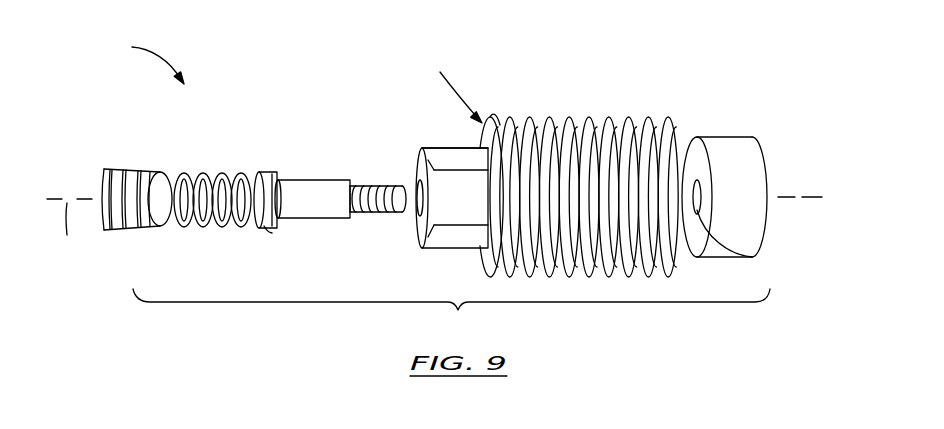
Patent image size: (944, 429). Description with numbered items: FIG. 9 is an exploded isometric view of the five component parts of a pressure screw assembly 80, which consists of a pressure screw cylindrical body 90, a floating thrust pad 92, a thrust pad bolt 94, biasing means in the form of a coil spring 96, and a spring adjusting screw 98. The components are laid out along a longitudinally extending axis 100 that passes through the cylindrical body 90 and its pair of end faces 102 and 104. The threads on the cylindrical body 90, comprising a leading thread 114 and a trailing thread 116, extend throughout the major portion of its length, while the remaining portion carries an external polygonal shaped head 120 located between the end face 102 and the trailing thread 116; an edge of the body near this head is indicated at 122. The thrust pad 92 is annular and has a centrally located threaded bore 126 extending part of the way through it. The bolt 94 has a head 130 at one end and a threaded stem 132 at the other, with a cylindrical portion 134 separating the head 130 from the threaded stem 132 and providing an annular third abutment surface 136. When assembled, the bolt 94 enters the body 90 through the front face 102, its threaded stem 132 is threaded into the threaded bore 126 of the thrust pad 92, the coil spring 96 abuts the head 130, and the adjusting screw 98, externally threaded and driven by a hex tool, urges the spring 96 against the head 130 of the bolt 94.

The pressure screw assembly 80 is at (141, 58).
The pressure screw cylindrical body 90 is at (454, 87).
The floating thrust pad 92 is at (747, 189).
The thrust pad bolt 94 is at (270, 170).
The coil spring 96 is at (198, 168).
The spring adjusting screw 98 is at (123, 168).
The longitudinally extending axis 100 is at (69, 229).
The end face 102 is at (418, 158).
The end face 104 is at (601, 164).
The leading thread 114 is at (645, 120).
The trailing thread 116 is at (490, 117).
The external polygonal shaped head 120 is at (440, 238).
The nut edge 122 is at (435, 147).
The threaded bore 126 is at (715, 256).
The head 130 is at (263, 227).
The threaded stem 132 is at (367, 203).
The cylindrical portion 134 is at (305, 203).
The annular third abutment surface 136 is at (357, 183).